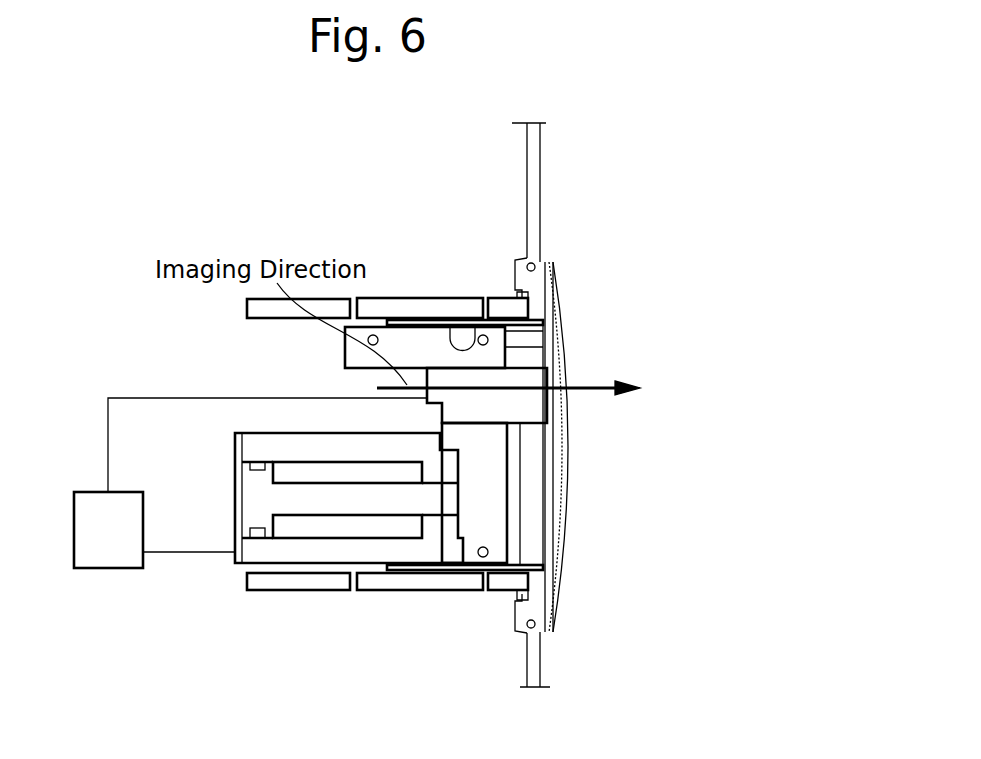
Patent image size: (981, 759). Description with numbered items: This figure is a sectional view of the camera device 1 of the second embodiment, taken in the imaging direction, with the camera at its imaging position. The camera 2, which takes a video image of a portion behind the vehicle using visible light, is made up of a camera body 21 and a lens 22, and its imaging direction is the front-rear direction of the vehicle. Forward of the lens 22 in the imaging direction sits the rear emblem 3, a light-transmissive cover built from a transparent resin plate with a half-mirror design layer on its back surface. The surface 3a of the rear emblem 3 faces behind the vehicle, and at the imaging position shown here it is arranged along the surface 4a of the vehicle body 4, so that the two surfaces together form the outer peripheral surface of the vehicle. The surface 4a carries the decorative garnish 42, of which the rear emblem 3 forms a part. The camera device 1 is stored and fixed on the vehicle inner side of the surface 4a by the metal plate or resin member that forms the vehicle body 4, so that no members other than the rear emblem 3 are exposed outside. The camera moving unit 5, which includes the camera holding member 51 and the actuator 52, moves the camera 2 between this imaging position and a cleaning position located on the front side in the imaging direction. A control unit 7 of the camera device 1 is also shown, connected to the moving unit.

The camera device 1 is at (260, 208).
The camera 2 is at (487, 320).
The camera body 21 is at (520, 380).
The lens 22 is at (551, 365).
The rear emblem 3 is at (651, 447).
The surface of rear emblem 3a is at (567, 485).
The vehicle body 4 is at (612, 394).
The surface of vehicle body 4a is at (612, 394).
The garnish 42 is at (542, 218).
The camera moving unit 5 is at (355, 433).
The camera holding member 51 is at (425, 345).
The actuator 52 is at (293, 553).
The control unit 7 is at (108, 545).